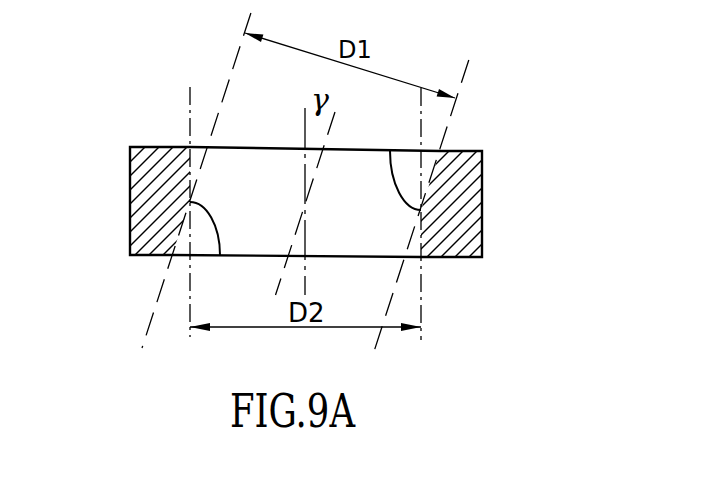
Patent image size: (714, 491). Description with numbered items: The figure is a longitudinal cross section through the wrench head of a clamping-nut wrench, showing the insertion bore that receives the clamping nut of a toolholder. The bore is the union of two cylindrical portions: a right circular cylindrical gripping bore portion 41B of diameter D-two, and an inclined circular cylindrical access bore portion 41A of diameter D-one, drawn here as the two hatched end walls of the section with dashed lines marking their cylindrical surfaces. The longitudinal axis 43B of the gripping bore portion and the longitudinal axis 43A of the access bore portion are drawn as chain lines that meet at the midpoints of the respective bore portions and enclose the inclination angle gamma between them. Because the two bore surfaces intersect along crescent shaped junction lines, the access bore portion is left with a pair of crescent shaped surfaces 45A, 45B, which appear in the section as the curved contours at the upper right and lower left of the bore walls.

The access bore portion 41A is at (374, 102).
The gripping bore portion 41B is at (217, 288).
The longitudinal axis of access bore portion 43A is at (283, 123).
The longitudinal axis of gripping bore portion 43B is at (305, 112).
The crescent shaped surface 45A is at (430, 162).
The crescent shaped surface 45B is at (185, 250).